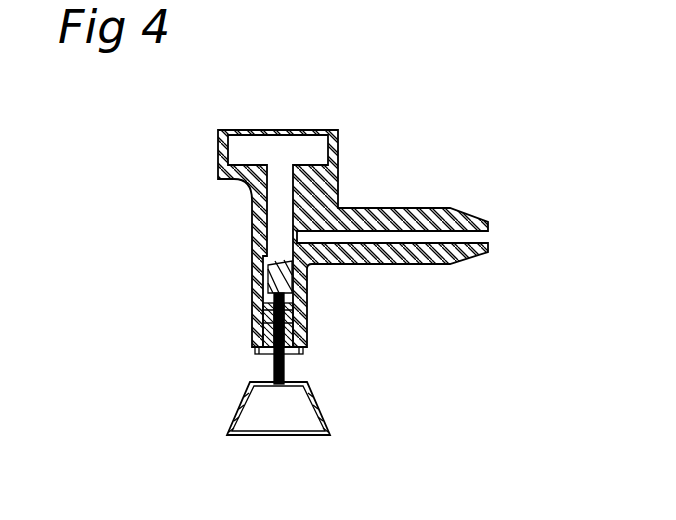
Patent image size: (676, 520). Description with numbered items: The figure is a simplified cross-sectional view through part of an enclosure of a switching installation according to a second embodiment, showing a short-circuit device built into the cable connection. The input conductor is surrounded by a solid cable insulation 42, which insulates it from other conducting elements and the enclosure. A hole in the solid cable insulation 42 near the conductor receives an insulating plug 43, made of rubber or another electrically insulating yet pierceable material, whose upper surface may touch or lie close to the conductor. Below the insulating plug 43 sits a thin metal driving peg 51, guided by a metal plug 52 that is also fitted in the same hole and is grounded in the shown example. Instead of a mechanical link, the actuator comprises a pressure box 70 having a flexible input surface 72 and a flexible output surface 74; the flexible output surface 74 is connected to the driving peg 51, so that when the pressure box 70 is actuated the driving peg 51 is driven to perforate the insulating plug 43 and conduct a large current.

The solid cable insulation 42 is at (405, 218).
The insulating plug 43 is at (298, 278).
The driving peg 51 is at (284, 372).
The metal plug 52 is at (271, 337).
The pressure box 70 is at (235, 405).
The flexible input surface 72 is at (277, 434).
The flexible output surface 74 is at (287, 386).